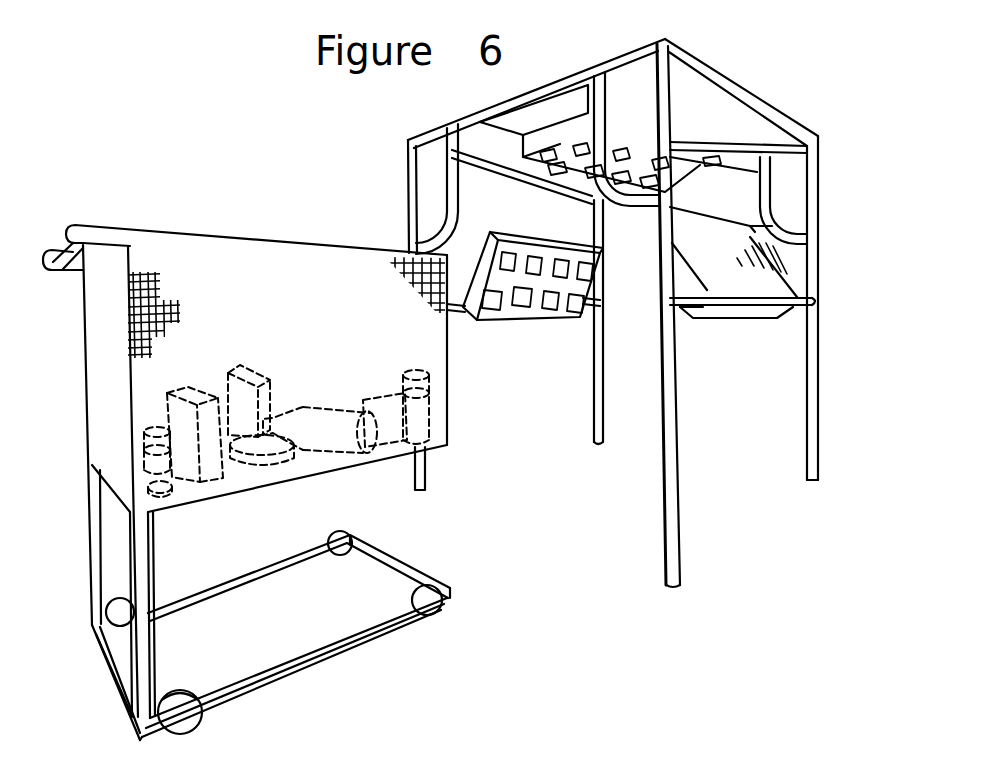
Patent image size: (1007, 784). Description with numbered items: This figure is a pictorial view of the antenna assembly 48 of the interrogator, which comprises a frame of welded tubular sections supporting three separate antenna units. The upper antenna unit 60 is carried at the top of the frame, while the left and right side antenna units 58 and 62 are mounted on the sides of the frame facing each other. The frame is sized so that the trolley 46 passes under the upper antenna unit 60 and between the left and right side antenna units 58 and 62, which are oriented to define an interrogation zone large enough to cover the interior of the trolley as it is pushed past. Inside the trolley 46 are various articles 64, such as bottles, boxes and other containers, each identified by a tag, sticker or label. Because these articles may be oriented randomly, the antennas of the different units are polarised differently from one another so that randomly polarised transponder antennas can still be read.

The trolley 46 is at (90, 390).
The antenna assembly 48 is at (408, 192).
The left side antenna unit 58 is at (525, 320).
The upper antenna unit 60 is at (562, 127).
The right side antenna unit 62 is at (754, 320).
The articles 64 is at (215, 473).